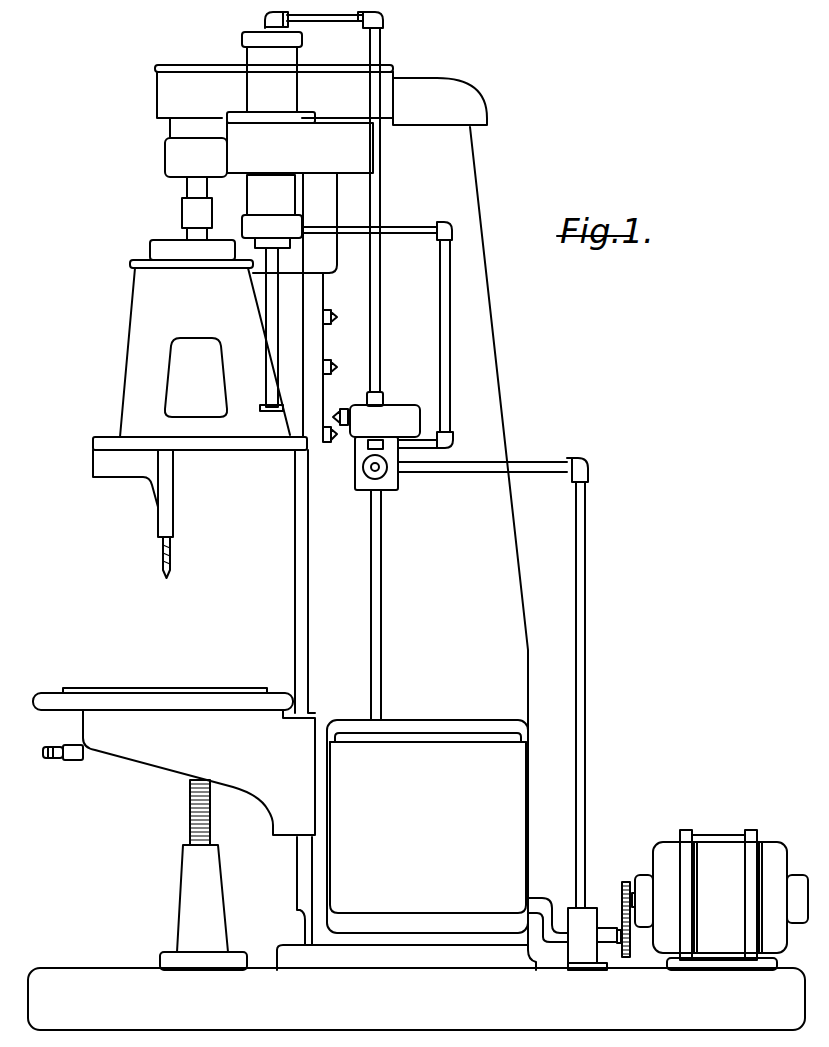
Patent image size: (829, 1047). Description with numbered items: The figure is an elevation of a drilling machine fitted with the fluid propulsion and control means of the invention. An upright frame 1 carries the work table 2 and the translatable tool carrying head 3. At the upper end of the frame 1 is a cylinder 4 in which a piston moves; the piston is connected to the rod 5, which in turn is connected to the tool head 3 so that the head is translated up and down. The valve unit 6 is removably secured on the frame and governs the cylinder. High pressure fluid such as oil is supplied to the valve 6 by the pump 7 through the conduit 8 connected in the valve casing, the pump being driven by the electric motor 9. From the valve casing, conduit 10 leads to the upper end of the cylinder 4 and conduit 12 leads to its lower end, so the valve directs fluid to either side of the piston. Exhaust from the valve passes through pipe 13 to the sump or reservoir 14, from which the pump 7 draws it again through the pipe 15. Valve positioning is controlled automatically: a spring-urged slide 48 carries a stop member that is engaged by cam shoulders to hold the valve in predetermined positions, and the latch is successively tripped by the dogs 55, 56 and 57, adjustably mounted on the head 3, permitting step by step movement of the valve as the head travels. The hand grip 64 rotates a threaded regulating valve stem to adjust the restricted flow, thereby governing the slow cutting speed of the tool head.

The upright frame 1 is at (498, 425).
The work table 2 is at (143, 758).
The translatable tool carrying head 3 is at (200, 409).
The cylinder 4 is at (271, 77).
The rod 5 is at (276, 302).
The valve unit 6 is at (410, 413).
The pump 7 is at (588, 917).
The conduit 8 is at (585, 740).
The electric motor 9 is at (720, 900).
The conduit 10 is at (380, 318).
The conduit 12 is at (447, 290).
The pipe 13 is at (381, 533).
The sump or reservoir 14 is at (427, 826).
The pipe 15 is at (544, 902).
The slide 48 is at (338, 408).
The dog 55 is at (335, 443).
The dog 56 is at (336, 367).
The dog 57 is at (336, 320).
The hand grip 64 is at (367, 473).